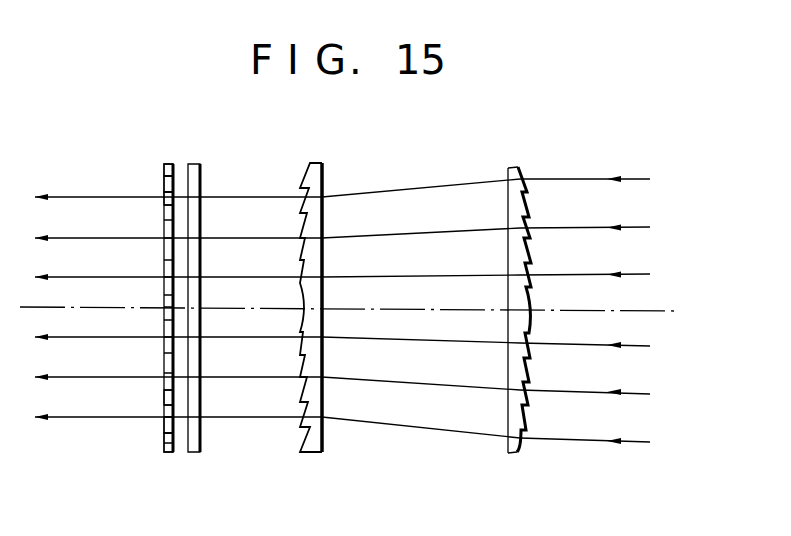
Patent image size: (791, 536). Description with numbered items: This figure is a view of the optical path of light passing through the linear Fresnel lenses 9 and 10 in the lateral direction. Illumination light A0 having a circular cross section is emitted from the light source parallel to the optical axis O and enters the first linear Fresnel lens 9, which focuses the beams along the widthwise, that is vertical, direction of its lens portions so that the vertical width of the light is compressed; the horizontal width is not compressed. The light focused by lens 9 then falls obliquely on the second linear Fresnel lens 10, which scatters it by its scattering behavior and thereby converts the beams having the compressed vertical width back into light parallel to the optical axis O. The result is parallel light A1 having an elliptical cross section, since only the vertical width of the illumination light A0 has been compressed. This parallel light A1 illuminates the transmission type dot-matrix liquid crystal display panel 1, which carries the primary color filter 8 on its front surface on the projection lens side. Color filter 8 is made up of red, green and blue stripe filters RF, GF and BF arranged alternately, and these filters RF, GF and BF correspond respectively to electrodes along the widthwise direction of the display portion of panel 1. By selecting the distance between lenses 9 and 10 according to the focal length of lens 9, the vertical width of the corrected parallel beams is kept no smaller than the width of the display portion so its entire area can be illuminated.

The primary color filter 8 is at (166, 162).
The transmission type dot-matrix liquid crystal display panel 1 is at (195, 162).
The linear Fresnel lens 10 is at (307, 162).
The first linear Fresnel lens 9 is at (511, 166).
The parallel light A1 is at (247, 196).
The illumination light AO is at (580, 178).
The optical axis O is at (651, 311).
The red stripe filter RF is at (164, 172).
The green stripe filter GF is at (163, 193).
The blue stripe filter BF is at (162, 212).